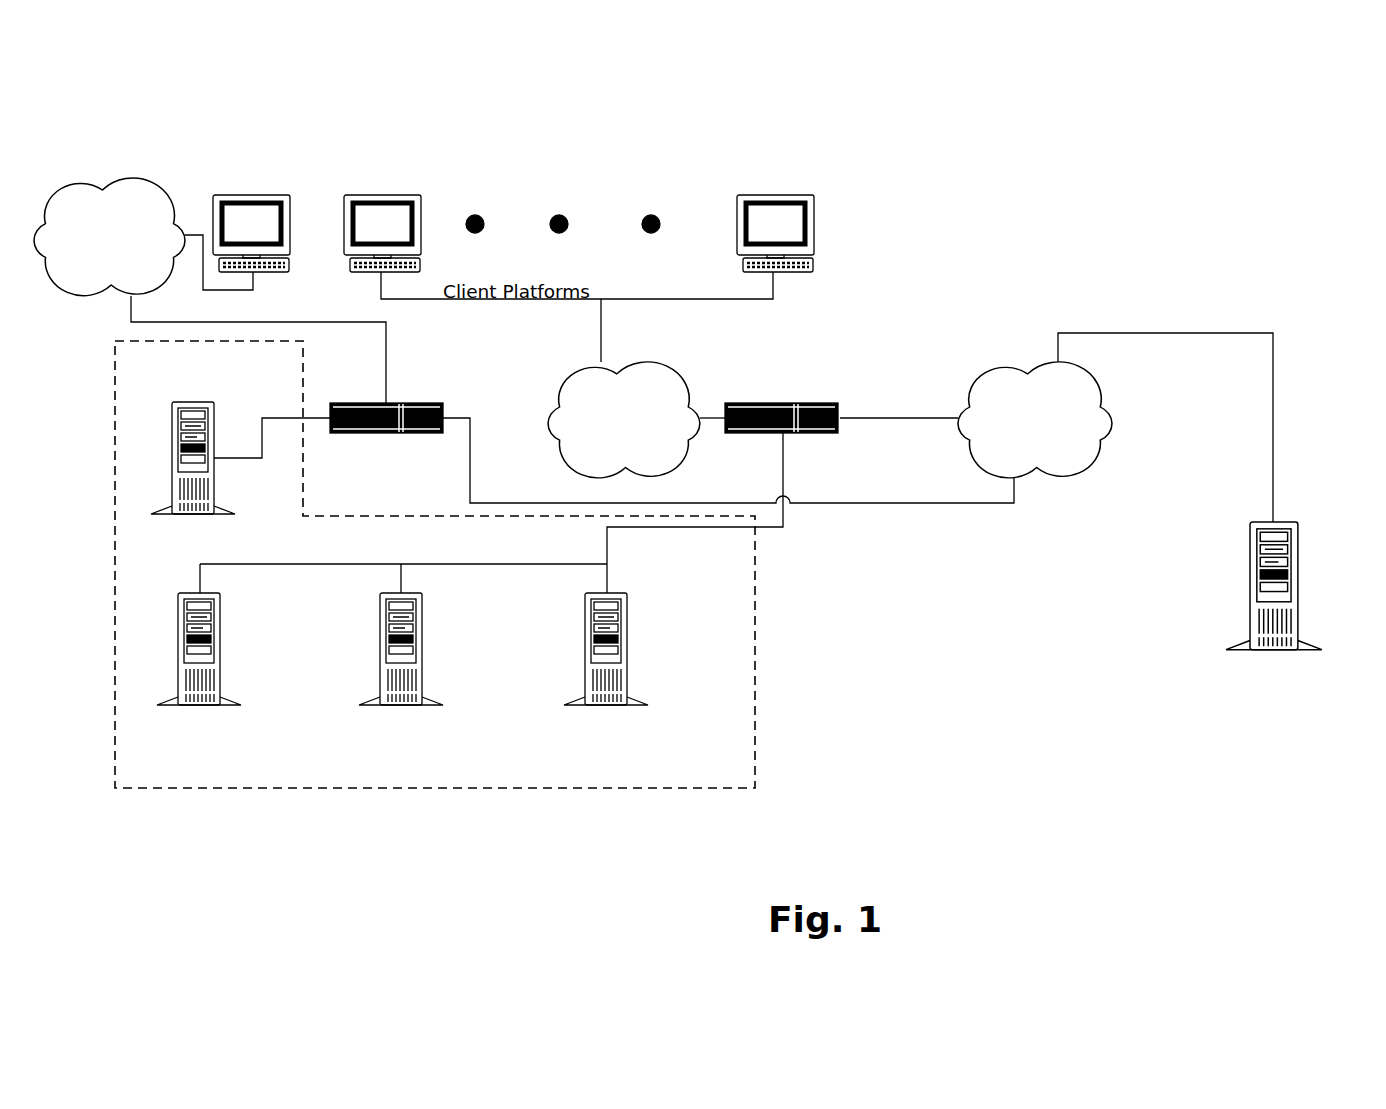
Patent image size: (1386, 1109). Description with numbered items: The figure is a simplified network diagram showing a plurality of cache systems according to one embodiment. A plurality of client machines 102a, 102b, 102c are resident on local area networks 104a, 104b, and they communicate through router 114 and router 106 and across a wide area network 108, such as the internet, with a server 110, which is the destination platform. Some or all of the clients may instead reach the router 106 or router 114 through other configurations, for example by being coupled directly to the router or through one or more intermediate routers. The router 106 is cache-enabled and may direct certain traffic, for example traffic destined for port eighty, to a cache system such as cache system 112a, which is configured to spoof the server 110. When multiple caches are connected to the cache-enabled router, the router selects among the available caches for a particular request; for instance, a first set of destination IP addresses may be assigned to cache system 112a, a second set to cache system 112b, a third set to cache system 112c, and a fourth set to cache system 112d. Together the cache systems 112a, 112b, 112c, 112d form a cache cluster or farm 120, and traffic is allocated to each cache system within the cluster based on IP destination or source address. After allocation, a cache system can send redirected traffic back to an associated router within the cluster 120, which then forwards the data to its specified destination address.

The client machine 102a is at (262, 195).
The client machine 102b is at (392, 195).
The client machine 102c is at (780, 195).
The local area network 104a is at (102, 178).
The local area network 104b is at (666, 372).
The router 106 is at (783, 403).
The wide area network 108 is at (1010, 362).
The server 110 is at (1250, 585).
The cache system 112a is at (178, 657).
The cache system 112b is at (380, 657).
The cache system 112c is at (585, 657).
The cache system 112d is at (172, 465).
The router 114 is at (385, 403).
The cache cluster 120 is at (755, 688).